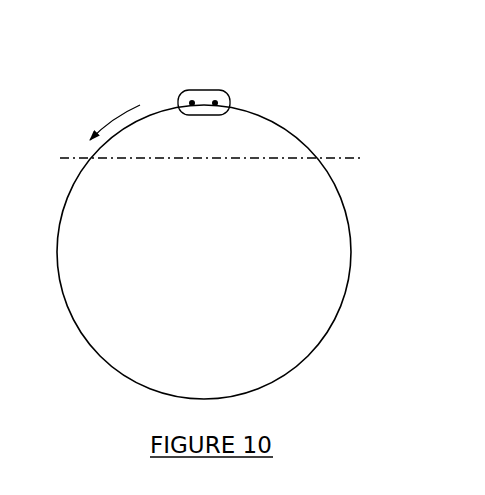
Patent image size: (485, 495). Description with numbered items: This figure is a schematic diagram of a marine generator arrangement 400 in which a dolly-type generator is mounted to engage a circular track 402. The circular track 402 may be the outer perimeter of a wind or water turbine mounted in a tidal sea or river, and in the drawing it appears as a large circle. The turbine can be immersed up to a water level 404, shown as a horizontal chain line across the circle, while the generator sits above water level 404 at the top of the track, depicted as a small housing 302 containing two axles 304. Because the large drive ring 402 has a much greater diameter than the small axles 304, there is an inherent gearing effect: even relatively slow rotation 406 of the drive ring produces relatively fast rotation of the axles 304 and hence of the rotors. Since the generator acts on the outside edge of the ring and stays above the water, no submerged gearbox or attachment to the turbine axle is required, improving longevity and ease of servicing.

The generator arrangement 400 is at (155, 87).
The device housing 302 is at (213, 88).
The axles 304 is at (215, 102).
The circular track 402 is at (348, 217).
The water level 404 is at (287, 157).
The rotation 406 is at (113, 112).